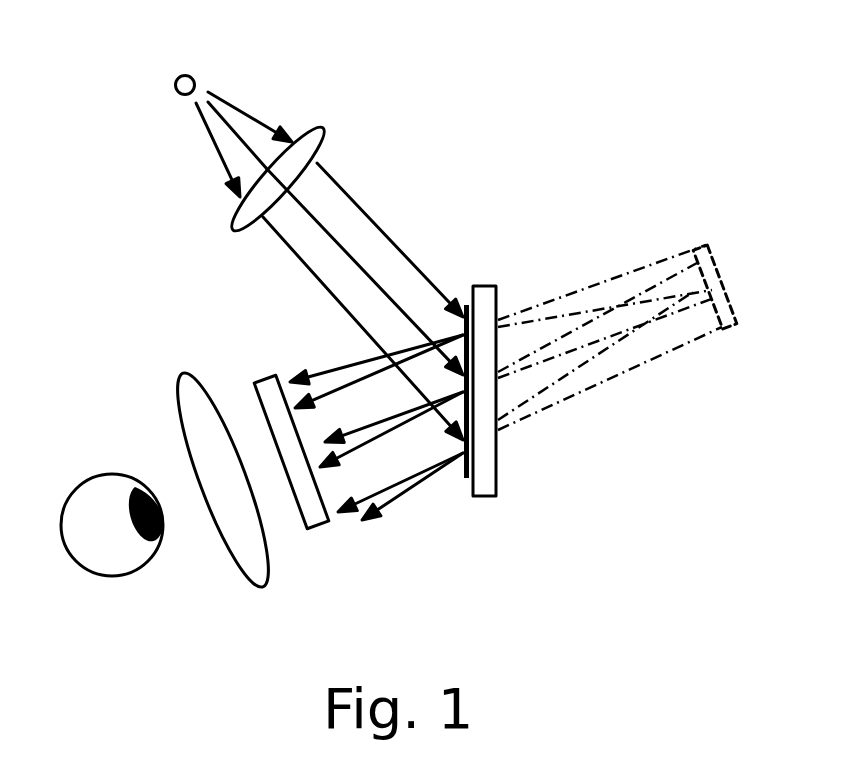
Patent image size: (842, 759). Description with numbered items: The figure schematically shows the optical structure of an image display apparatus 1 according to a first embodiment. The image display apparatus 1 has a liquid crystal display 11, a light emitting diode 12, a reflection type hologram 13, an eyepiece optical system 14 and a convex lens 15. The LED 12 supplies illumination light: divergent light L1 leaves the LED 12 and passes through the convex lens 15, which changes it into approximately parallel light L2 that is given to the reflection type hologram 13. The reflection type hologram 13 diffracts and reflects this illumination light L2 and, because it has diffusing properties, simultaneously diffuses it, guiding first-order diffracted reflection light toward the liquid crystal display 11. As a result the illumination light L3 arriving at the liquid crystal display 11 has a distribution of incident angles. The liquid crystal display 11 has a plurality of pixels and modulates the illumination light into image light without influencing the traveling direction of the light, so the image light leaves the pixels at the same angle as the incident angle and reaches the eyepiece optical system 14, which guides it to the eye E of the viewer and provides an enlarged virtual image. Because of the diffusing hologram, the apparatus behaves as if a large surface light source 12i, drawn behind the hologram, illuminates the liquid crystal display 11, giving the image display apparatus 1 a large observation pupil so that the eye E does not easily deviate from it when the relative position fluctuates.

The image display apparatus 1 is at (490, 527).
The liquid crystal display 11 is at (325, 523).
The light emitting diode (LED) 12 is at (192, 73).
The large surface light source 12i is at (730, 330).
The reflection type hologram 13 is at (466, 304).
The eyepiece optical system 14 is at (268, 577).
The convex lens 15 is at (327, 137).
The eye E is at (120, 578).
The divergent light L1 is at (231, 144).
The approximately parallel light L2 is at (359, 301).
The illumination light L3 is at (376, 436).